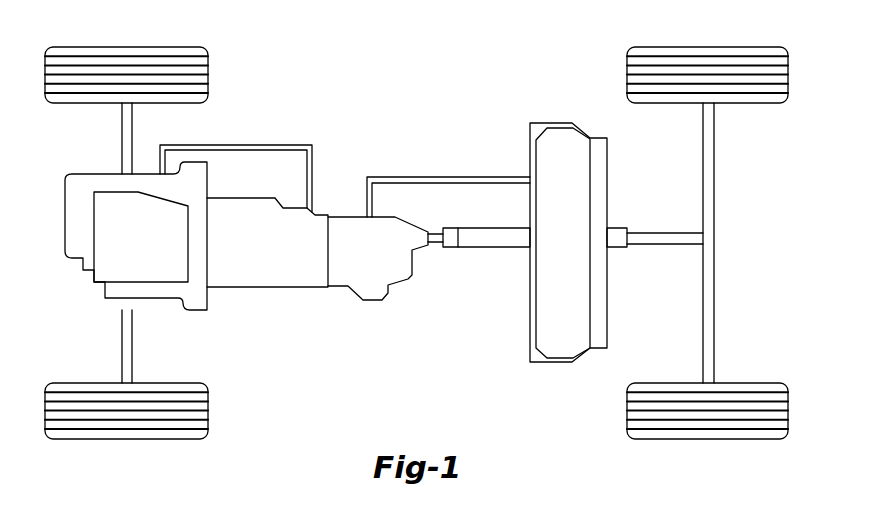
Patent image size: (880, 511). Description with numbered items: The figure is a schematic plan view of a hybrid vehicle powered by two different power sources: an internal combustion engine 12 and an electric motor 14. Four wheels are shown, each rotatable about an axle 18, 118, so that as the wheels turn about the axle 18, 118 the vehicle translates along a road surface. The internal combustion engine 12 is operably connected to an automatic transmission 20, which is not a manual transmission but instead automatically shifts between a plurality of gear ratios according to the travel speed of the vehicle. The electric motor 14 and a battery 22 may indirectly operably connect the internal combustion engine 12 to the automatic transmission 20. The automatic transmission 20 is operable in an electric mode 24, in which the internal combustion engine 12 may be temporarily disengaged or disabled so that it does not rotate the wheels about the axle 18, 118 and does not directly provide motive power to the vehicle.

The internal combustion engine 12 is at (65, 218).
The electric motor 14 is at (384, 296).
The axle 18 is at (122, 144).
The automatic transmission 20 is at (258, 287).
The battery 22 is at (607, 311).
The electric mode 24 is at (433, 178).
The axle 118 is at (703, 168).